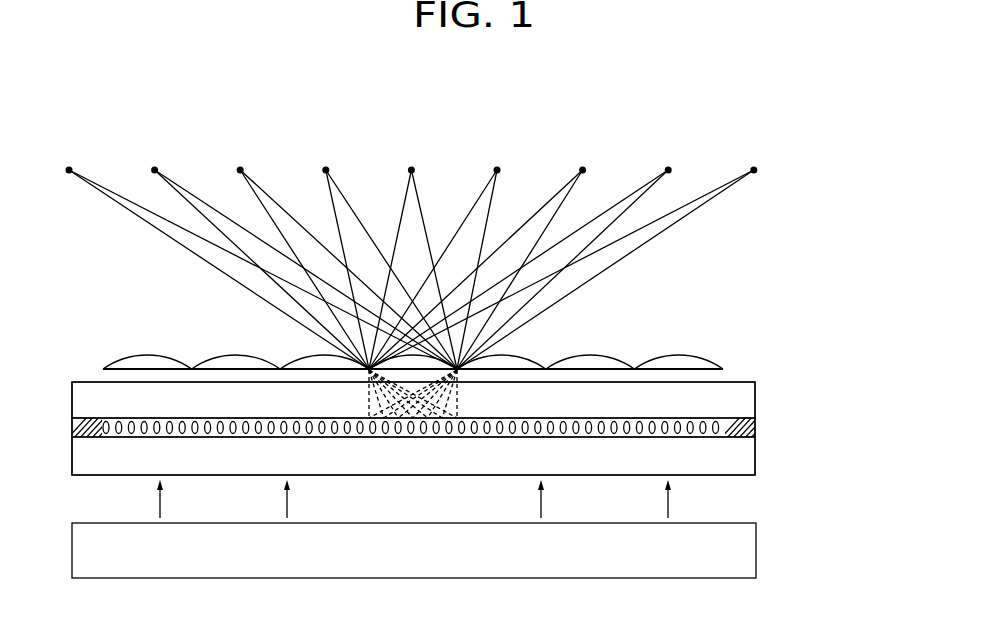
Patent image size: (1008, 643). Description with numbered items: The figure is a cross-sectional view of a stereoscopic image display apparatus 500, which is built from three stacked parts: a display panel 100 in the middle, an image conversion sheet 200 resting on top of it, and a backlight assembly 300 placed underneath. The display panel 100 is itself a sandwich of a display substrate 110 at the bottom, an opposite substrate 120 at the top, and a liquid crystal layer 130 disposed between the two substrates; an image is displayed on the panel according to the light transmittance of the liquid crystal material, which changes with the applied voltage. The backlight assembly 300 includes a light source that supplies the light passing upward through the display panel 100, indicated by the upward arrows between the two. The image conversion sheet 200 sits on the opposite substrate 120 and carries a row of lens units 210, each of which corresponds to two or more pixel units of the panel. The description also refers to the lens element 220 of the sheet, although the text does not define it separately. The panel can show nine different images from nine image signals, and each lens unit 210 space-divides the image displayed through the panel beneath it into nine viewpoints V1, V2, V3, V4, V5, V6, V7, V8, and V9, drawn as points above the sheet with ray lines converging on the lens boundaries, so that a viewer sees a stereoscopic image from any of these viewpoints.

The stereoscopic image display apparatus 500 is at (434, 100).
The image conversion sheet 200 is at (822, 315).
The lenticular lenses 220 is at (613, 359).
The lens unit 210 is at (700, 362).
The display panel 100 is at (822, 385).
The opposite substrate 120 is at (749, 398).
The liquid crystal layer 130 is at (749, 428).
The display substrate 110 is at (749, 455).
The backlight assembly 300 is at (750, 550).
The viewpoint V1 is at (257, 256).
The viewpoint V2 is at (300, 256).
The viewpoint V3 is at (342, 256).
The viewpoint V4 is at (385, 256).
The viewpoint V5 is at (413, 256).
The viewpoint V6 is at (439, 256).
The viewpoint V7 is at (482, 256).
The viewpoint V8 is at (524, 256).
The viewpoint V9 is at (567, 256).